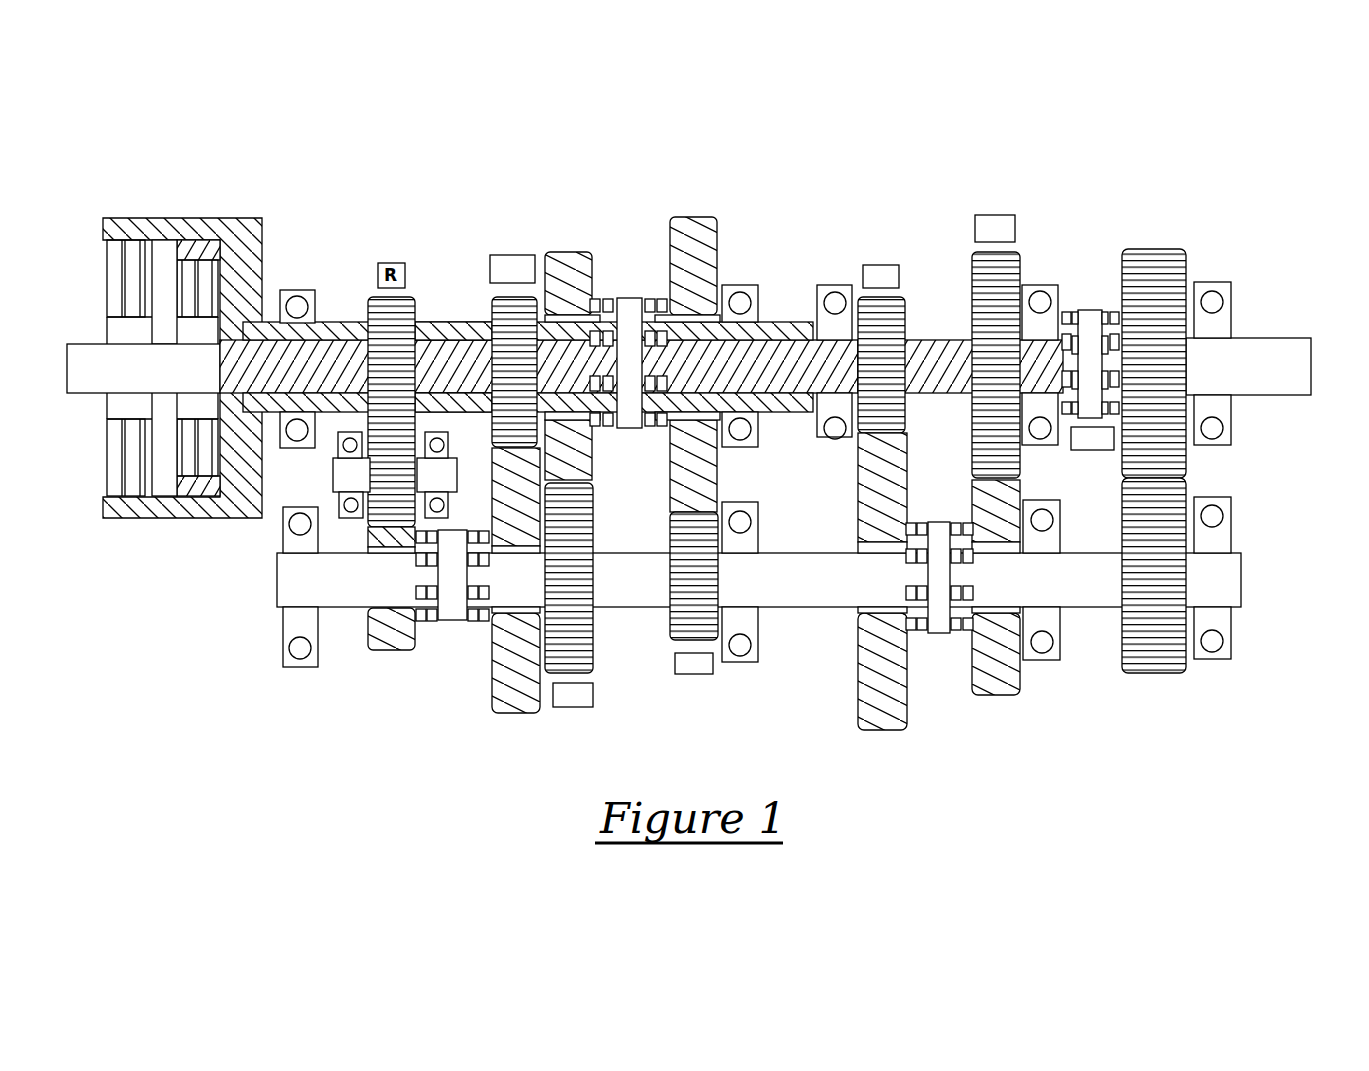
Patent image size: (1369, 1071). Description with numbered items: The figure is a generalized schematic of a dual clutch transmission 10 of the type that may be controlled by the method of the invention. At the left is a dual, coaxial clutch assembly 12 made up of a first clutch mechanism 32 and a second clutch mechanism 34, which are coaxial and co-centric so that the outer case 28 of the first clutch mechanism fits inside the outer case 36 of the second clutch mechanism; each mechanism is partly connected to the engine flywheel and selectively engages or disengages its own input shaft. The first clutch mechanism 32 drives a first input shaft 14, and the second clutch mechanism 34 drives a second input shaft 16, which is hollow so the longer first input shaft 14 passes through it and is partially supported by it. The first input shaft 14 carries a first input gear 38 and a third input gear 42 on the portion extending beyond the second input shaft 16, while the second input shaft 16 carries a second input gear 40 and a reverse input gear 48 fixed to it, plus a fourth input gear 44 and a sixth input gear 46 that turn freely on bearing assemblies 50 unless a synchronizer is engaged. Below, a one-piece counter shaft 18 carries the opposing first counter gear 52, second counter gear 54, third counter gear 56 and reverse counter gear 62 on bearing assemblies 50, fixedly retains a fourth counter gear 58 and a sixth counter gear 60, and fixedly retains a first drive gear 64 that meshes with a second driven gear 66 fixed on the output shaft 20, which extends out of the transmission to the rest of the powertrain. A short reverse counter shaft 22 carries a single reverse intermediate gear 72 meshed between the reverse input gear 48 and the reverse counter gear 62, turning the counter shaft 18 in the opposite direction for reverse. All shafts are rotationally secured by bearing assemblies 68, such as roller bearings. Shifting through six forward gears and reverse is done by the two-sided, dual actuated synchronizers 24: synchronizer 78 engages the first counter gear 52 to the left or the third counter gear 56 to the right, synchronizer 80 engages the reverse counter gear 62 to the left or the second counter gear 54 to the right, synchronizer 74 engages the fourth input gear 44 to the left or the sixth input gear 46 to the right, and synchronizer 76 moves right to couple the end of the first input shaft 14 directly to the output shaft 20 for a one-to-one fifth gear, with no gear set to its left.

The dual clutch transmission 10 is at (482, 200).
The dual, coaxial clutch assembly 12 is at (203, 314).
The first input shaft 14 is at (945, 345).
The second input shaft 16 is at (316, 332).
The counter shaft 18 is at (287, 581).
The output shaft 20 is at (1305, 340).
The reverse counter shaft 22 is at (290, 480).
The synchronizers 24 is at (651, 282).
The outer case of the first clutch mechanism 28 is at (260, 278).
The first clutch mechanism 32 is at (208, 272).
The second clutch mechanism 34 is at (132, 250).
The outer case of the second clutch mechanism 36 is at (262, 245).
The first input gear 38 is at (907, 313).
The second input gear 40 is at (490, 298).
The third input gear 42 is at (1012, 258).
The fourth input gear 44 is at (580, 252).
The sixth input gear 46 is at (716, 232).
The reverse input gear 48 is at (420, 306).
The bearing assemblies 50 is at (598, 418).
The first counter gear 52 is at (866, 658).
The second counter gear 54 is at (535, 700).
The third counter gear 56 is at (995, 685).
The fourth counter gear 58 is at (585, 656).
The sixth counter gear 60 is at (670, 625).
The reverse counter gear 62 is at (372, 645).
The first drive gear 64 is at (1126, 650).
The second driven gear 66 is at (1165, 268).
The bearing assembly 68 is at (757, 300).
The reverse intermediate gear 72 is at (376, 473).
The synchronizer 74 is at (629, 300).
The synchronizer 76 is at (1092, 325).
The synchronizer 78 is at (940, 620).
The synchronizer 80 is at (455, 618).